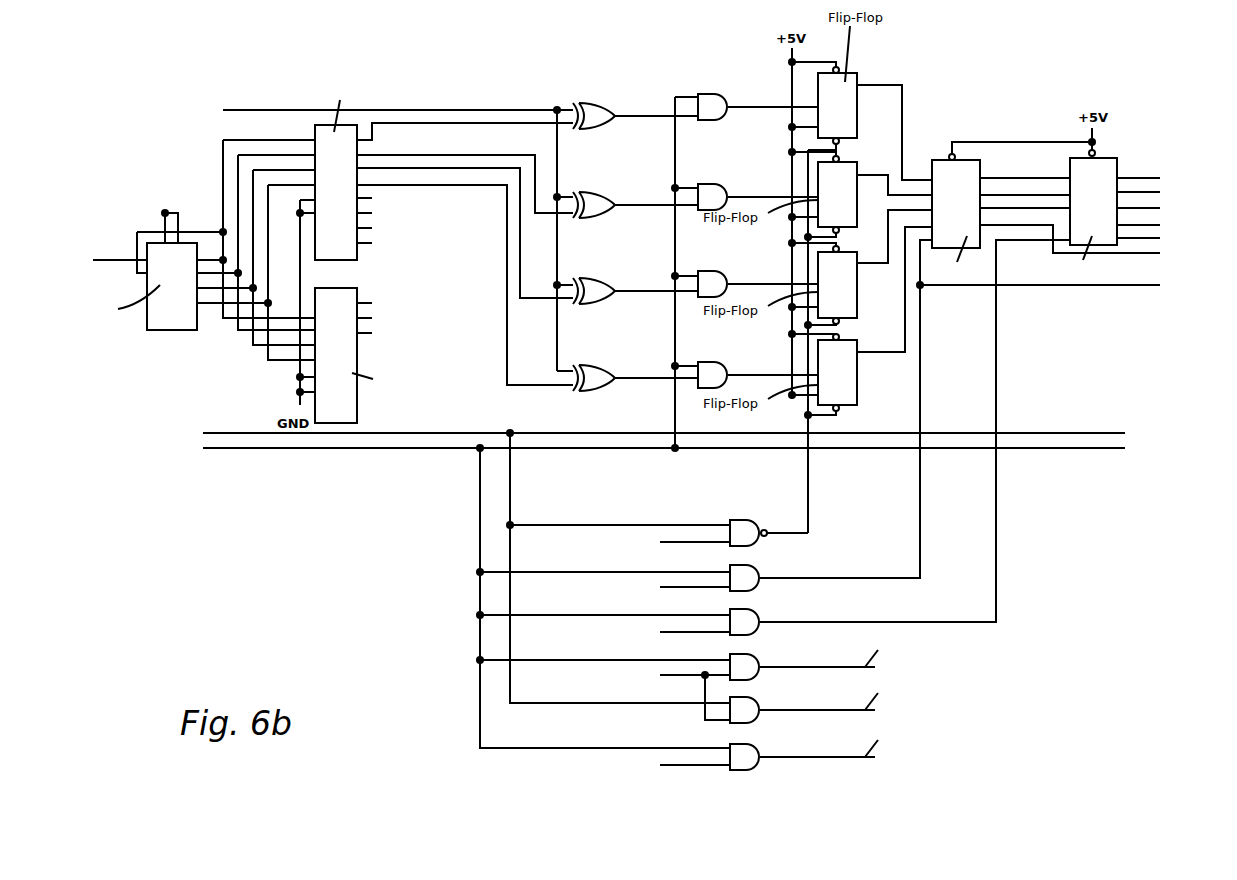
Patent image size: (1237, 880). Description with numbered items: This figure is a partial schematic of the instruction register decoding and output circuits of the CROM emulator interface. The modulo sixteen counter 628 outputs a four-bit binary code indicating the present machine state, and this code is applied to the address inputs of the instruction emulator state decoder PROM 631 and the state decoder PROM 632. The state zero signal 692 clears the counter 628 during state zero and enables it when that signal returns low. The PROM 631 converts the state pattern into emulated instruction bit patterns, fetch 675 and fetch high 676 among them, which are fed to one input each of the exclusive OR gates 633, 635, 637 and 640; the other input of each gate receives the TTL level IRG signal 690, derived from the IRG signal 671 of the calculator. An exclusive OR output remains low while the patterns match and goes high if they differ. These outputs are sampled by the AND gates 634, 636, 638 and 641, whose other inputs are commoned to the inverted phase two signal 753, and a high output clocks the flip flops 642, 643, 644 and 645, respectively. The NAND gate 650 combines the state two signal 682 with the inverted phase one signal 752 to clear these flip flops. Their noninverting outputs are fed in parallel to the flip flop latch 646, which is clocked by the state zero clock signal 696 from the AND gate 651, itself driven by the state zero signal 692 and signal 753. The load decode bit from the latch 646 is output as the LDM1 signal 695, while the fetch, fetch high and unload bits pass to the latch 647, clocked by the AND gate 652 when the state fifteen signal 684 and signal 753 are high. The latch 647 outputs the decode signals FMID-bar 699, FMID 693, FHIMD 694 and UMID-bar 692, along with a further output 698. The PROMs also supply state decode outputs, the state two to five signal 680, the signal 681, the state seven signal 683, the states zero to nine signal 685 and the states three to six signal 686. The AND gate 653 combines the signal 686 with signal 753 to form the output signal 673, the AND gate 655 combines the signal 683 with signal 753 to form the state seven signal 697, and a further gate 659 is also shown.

The modulo 16 counter 628 is at (186, 330).
The instruction emulator state decoder PROM 631 is at (312, 132).
The state decoder PROM 632 is at (358, 408).
The exclusive OR gate 633 is at (606, 107).
The AND gate 634 is at (730, 97).
The exclusive OR gate 635 is at (598, 192).
The AND gate 636 is at (732, 186).
The exclusive OR gate 637 is at (603, 280).
The AND gate 638 is at (732, 275).
The exclusive OR gate 640 is at (603, 367).
The AND gate 641 is at (731, 365).
The flip flop 642 is at (857, 76).
The flip flop 643 is at (858, 165).
The flip flop 644 is at (857, 300).
The flip flop 645 is at (857, 394).
The flip flop latch 646 is at (984, 174).
The latch 647 is at (1117, 158).
The NAND gate 650 is at (751, 520).
The AND gate 651 is at (760, 567).
The AND gate 652 is at (760, 612).
The AND gate 653 is at (760, 657).
The AND gate 655 is at (760, 747).
The AND gate 659 is at (760, 700).
The IRG signal 671 is at (888, 687).
The state 3 to state 6 phase-2-bar signal 673 is at (888, 644).
The fetch 675 is at (458, 123).
The fetch high 676 is at (515, 155).
The state 2 to state 5 signal 680 is at (120, 260).
The signal line 681 is at (372, 213).
The state 2 signal 682 is at (372, 228).
The state 7 signal 683 is at (372, 243).
The state 15 signal 684 is at (372, 303).
The state 2 signal to state 9 signal 685 is at (372, 318).
The state 3 to state 6 signal 686 is at (372, 333).
The IRG signal 690 is at (553, 110).
The state zero signal 692 is at (165, 212).
The FMID 693 is at (1160, 225).
The FHIMD 694 is at (1160, 238).
The LDM1 signal 695 is at (1160, 253).
The state zero phase-2-bar clock signal 696 is at (1160, 285).
The state 7 phase-2-bar signal 697 is at (878, 740).
The output signal line 698 is at (1160, 192).
The FMID-bar 699 is at (1160, 178).
The phase-1-bar signal 752 is at (1125, 433).
The phase-2-bar signal 753 is at (1125, 448).